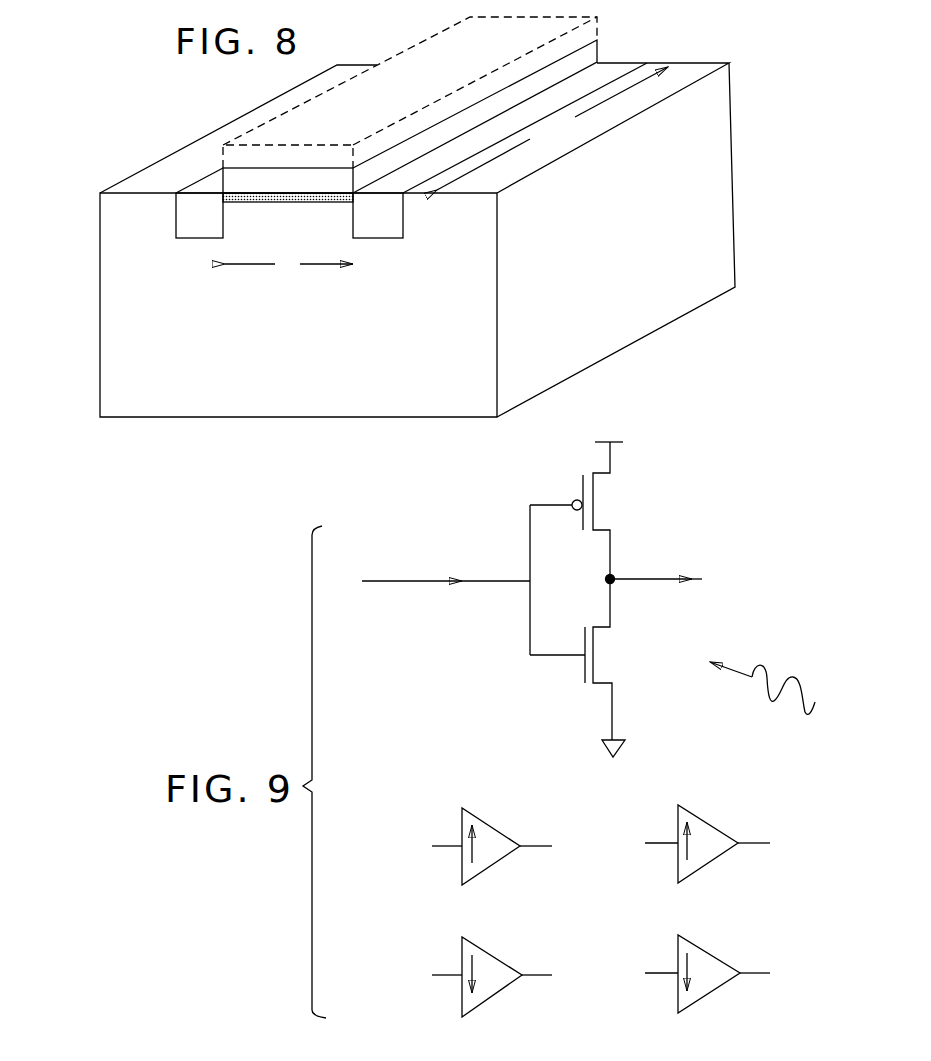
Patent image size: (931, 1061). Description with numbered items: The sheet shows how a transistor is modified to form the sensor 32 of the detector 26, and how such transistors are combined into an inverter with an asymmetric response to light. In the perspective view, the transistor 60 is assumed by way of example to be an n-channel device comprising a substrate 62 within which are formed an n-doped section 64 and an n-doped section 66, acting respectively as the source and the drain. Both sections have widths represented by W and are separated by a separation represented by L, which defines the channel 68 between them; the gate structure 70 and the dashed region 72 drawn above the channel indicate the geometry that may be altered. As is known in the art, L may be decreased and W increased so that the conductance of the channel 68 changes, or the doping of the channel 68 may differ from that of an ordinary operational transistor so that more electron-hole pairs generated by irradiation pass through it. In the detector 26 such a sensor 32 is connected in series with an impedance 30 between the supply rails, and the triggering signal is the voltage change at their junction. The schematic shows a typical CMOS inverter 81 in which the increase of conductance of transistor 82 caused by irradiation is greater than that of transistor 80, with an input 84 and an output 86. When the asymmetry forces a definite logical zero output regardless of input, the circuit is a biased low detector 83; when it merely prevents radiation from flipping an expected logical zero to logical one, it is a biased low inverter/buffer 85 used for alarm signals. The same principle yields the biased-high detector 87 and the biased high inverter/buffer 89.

In FIG. 9, the detector 26 is at (477, 662).
In FIG. 9, the impedance 30 is at (713, 458).
In FIG. 8, the sensor 32 is at (153, 467).
In FIG. 9, the sensor 32 is at (510, 670).
In FIG. 8, the transistor 60 is at (103, 432).
In FIG. 8, the substrate 62 is at (178, 400).
In FIG. 8, the n-doped section 64 is at (388, 238).
In FIG. 8, the n-doped section 66 is at (176, 208).
In FIG. 8, the channel 68 is at (270, 199).
In FIG. 8, the gate electrode 70 is at (597, 42).
In FIG. 8, the extended gate region 72 is at (486, 17).
In FIG. 9, the transistor 80 is at (595, 498).
In FIG. 9, the CMOS inverter 81 is at (440, 627).
In FIG. 9, the transistor 82 is at (595, 650).
In FIG. 9, the biased low detector 83 is at (488, 953).
In FIG. 9, the input 84 is at (407, 580).
In FIG. 9, the biased low inverter/buffer 85 is at (703, 953).
In FIG. 9, the output 86 is at (658, 578).
In FIG. 9, the biased-high detector 87 is at (487, 825).
In FIG. 9, the biased high inverter/buffer 89 is at (703, 822).